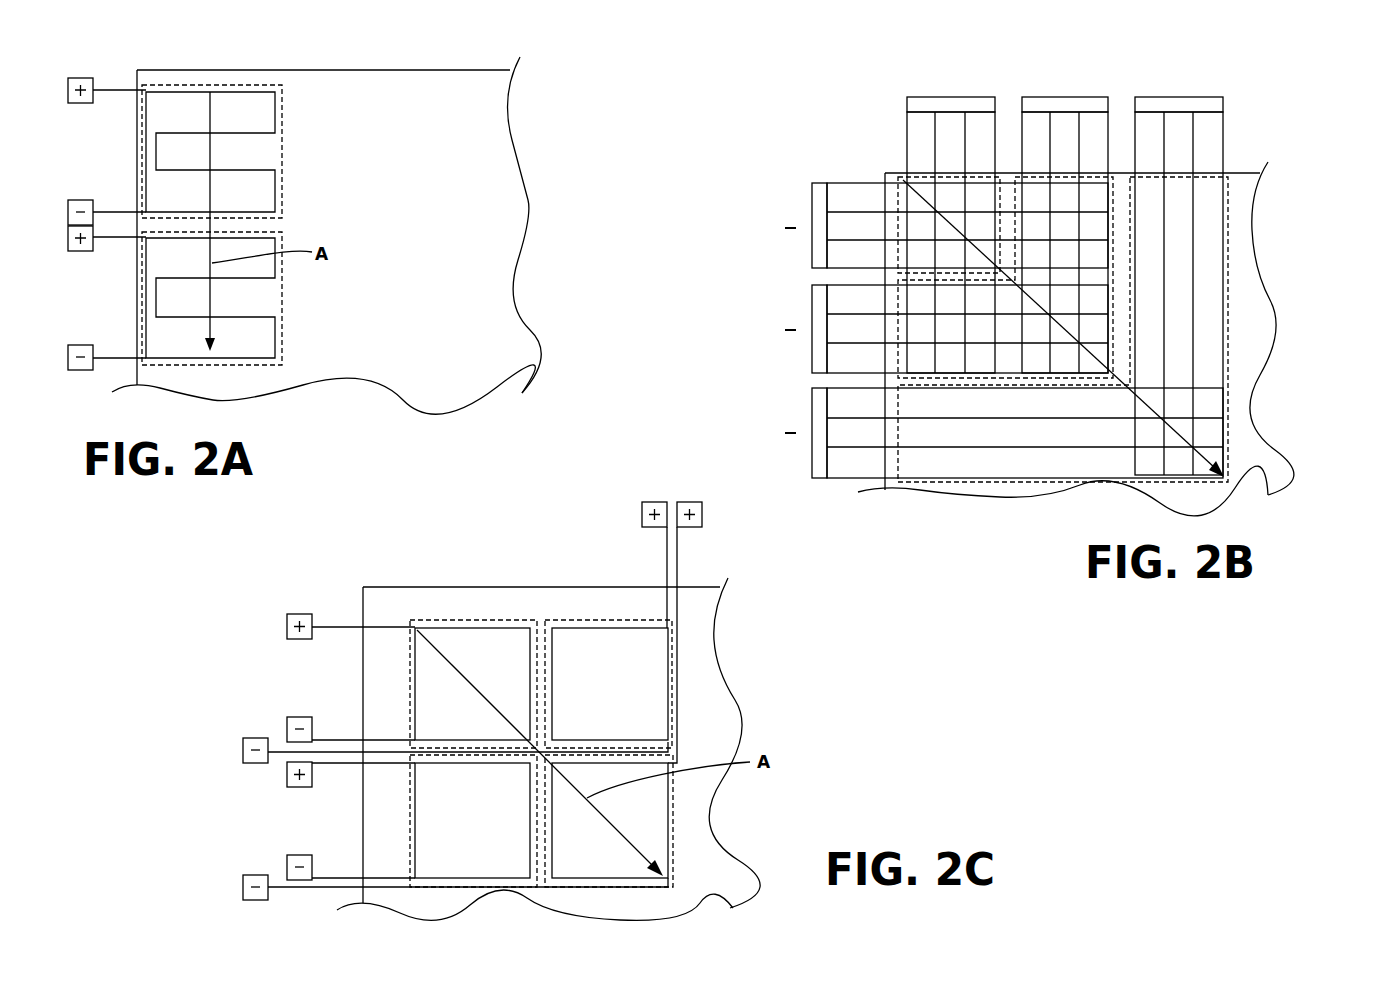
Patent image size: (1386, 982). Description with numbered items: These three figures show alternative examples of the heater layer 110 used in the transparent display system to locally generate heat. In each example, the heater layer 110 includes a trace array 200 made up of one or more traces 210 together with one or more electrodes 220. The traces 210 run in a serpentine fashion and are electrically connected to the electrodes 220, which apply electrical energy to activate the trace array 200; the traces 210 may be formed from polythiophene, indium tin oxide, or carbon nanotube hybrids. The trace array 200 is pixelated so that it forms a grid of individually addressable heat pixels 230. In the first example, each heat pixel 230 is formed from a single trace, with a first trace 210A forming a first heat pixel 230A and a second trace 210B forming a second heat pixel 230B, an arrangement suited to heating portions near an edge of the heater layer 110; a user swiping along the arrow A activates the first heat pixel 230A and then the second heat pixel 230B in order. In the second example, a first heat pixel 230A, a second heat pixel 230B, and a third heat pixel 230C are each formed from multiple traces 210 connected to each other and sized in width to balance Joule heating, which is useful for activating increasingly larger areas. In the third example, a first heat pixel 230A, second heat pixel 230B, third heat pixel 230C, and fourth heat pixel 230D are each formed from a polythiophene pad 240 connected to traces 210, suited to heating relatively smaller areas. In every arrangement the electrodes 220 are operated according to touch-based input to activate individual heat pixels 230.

In FIG. 2A, the heater layer 110 is at (510, 118).
In FIG. 2B, the heater layer 110 is at (1252, 195).
In FIG. 2C, the heater layer 110 is at (715, 615).
In FIG. 2A, the trace array 200 is at (118, 88).
In FIG. 2B, the trace array 200 is at (848, 182).
In FIG. 2C, the trace array 200 is at (335, 625).
In FIG. 2A, the trace 210 is at (292, 225).
In FIG. 2B, the trace 210 is at (1225, 332).
In FIG. 2C, the trace 210 is at (677, 558).
In FIG. 2A, the first trace 210A is at (276, 112).
In FIG. 2A, the second trace 210B is at (276, 190).
In FIG. 2A, the electrode 220 is at (80, 103).
In FIG. 2B, the electrode 220 is at (1147, 97).
In FIG. 2C, the electrode 220 is at (297, 641).
In FIG. 2A, the heat pixel 230 is at (306, 225).
In FIG. 2B, the heat pixel 230 is at (1059, 284).
In FIG. 2C, the heat pixel 230 is at (566, 735).
In FIG. 2A, the first heat pixel 230A is at (282, 168).
In FIG. 2B, the first heat pixel 230A is at (896, 188).
In FIG. 2C, the first heat pixel 230A is at (450, 620).
In FIG. 2A, the second heat pixel 230B is at (282, 302).
In FIG. 2B, the second heat pixel 230B is at (1113, 248).
In FIG. 2C, the second heat pixel 230B is at (672, 688).
In FIG. 2B, the third heat pixel 230C is at (1228, 378).
In FIG. 2C, the third heat pixel 230C is at (673, 808).
In FIG. 2C, the fourth heat pixel 230D is at (448, 885).
In FIG. 2C, the polythiophene pad 240 is at (490, 724).